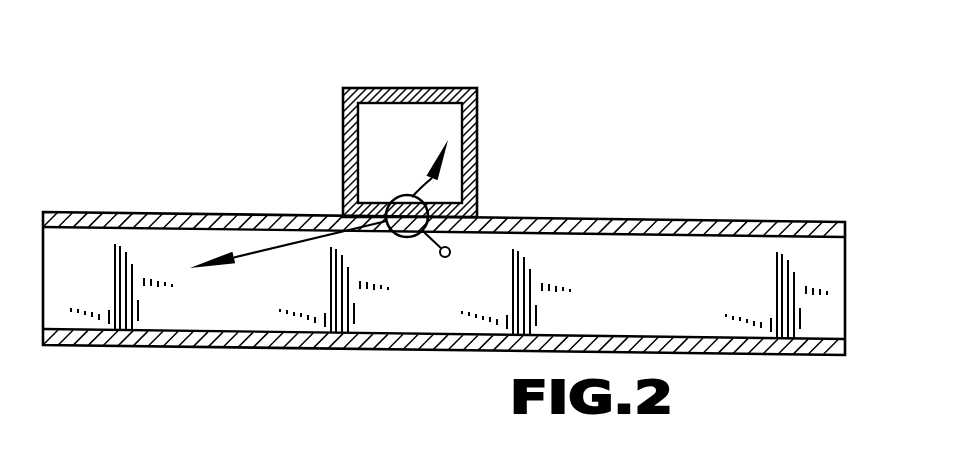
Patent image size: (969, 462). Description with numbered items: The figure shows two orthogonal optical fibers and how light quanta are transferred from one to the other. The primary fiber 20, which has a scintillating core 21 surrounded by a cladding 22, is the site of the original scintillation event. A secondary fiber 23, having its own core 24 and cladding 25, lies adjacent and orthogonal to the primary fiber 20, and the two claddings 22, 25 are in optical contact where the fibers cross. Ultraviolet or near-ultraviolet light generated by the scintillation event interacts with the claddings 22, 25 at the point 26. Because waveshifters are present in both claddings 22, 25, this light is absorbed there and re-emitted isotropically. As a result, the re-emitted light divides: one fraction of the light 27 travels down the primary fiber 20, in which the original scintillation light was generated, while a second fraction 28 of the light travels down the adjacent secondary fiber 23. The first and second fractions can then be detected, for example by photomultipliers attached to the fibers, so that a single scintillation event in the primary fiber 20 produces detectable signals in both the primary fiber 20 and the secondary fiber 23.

The primary fiber 20 is at (563, 205).
The scintillating core 21 is at (623, 255).
The cladding 22 is at (735, 225).
The secondary fiber 23 is at (477, 92).
The core 24 is at (387, 118).
The cladding 25 is at (345, 122).
The point 26 is at (390, 199).
The fraction of the light 27 is at (257, 251).
The second fraction of the light 28 is at (433, 190).